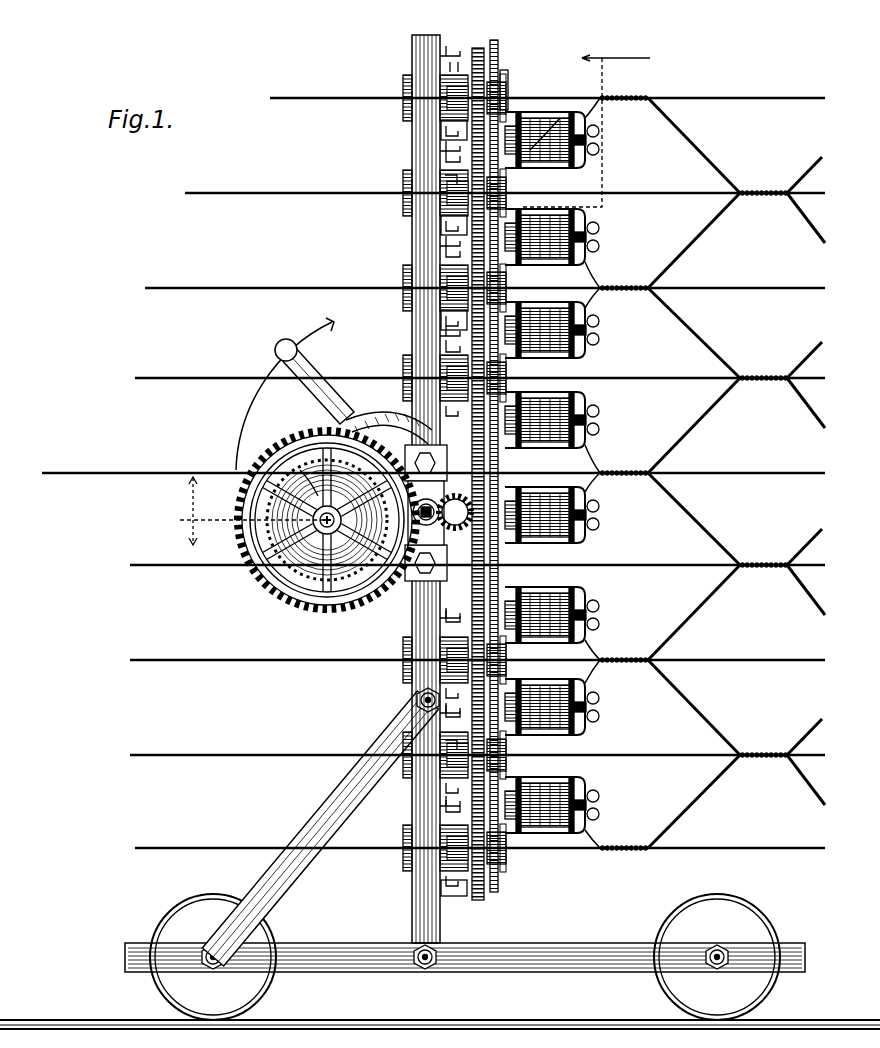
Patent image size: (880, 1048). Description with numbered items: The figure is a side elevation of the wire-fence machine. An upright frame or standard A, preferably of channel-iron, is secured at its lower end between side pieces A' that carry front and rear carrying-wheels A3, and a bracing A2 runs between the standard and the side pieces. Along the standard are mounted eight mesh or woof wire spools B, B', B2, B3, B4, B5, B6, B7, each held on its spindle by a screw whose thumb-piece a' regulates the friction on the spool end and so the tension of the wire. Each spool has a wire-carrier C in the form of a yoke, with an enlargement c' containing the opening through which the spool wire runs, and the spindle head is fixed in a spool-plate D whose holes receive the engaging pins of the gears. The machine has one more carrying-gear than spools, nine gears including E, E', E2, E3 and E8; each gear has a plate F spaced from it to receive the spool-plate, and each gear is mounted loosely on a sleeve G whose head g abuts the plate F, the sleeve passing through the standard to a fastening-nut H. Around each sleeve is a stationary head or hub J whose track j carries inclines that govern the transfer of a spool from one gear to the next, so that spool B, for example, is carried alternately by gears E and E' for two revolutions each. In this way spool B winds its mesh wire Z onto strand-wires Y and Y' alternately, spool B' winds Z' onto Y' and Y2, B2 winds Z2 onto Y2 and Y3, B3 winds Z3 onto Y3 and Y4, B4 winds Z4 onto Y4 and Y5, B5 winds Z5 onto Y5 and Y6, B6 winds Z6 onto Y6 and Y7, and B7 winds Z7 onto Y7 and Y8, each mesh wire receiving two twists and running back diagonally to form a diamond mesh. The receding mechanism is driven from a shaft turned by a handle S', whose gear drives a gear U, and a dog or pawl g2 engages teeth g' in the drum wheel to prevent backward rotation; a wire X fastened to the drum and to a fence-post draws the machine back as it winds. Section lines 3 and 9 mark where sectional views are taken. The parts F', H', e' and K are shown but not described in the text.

The frame or standard A is at (396, 472).
The side pieces A' is at (465, 942).
The bracing A2 is at (330, 830).
The carrying-wheels A3 is at (440, 961).
The mesh or woof wire spool B is at (552, 144).
The mesh or woof wire spool B' is at (552, 241).
The mesh or woof wire spool B2 is at (552, 327).
The mesh or woof wire spool B3 is at (552, 428).
The mesh or woof wire spool B4 is at (552, 516).
The mesh or woof wire spool B5 is at (552, 615).
The mesh or woof wire spool B6 is at (552, 706).
The mesh or woof wire spool B7 is at (552, 804).
The wire-carrier C is at (538, 112).
The enlargement c' is at (601, 471).
The thumb-piece a' is at (609, 236).
The spool-plate D is at (545, 464).
The carrying-gear E is at (454, 447).
The carrying-gear E' is at (443, 132).
The carrying-gear E2 is at (443, 225).
The carrying-gear E3 is at (443, 320).
The carrying-gear E8 is at (453, 899).
The plate F is at (490, 455).
The guide bar F' is at (465, 466).
The sleeve or spindle G is at (508, 98).
The head g is at (516, 458).
The teeth g' is at (294, 449).
The dog or pawl g2 is at (389, 415).
The fastening-nut H is at (397, 477).
The clamp H' is at (441, 475).
The head or hub J is at (423, 469).
The track or face j is at (426, 430).
The pinion gears e' is at (494, 473).
The main gear wheel K is at (252, 570).
The gear U is at (238, 500).
The handle S' is at (295, 394).
The wire X is at (92, 475).
The section line 9 is at (247, 511).
The section line 3 is at (585, 121).
The strand-wire Y is at (547, 83).
The strand-wire Y' is at (505, 205).
The strand-wire Y2 is at (750, 290).
The strand-wire Y3 is at (650, 380).
The strand-wire Y4 is at (784, 475).
The strand-wire Y5 is at (650, 567).
The strand-wire Y6 is at (770, 662).
The strand-wire Y7 is at (650, 757).
The strand-wire Y8 is at (662, 850).
The mesh or woof wire Z is at (735, 145).
The mesh or woof wire Z' is at (736, 240).
The mesh or woof wire Z2 is at (694, 333).
The mesh or woof wire Z3 is at (736, 407).
The mesh or woof wire Z4 is at (694, 519).
The mesh or woof wire Z5 is at (736, 594).
The mesh or woof wire Z6 is at (694, 707).
The mesh or woof wire Z7 is at (736, 783).